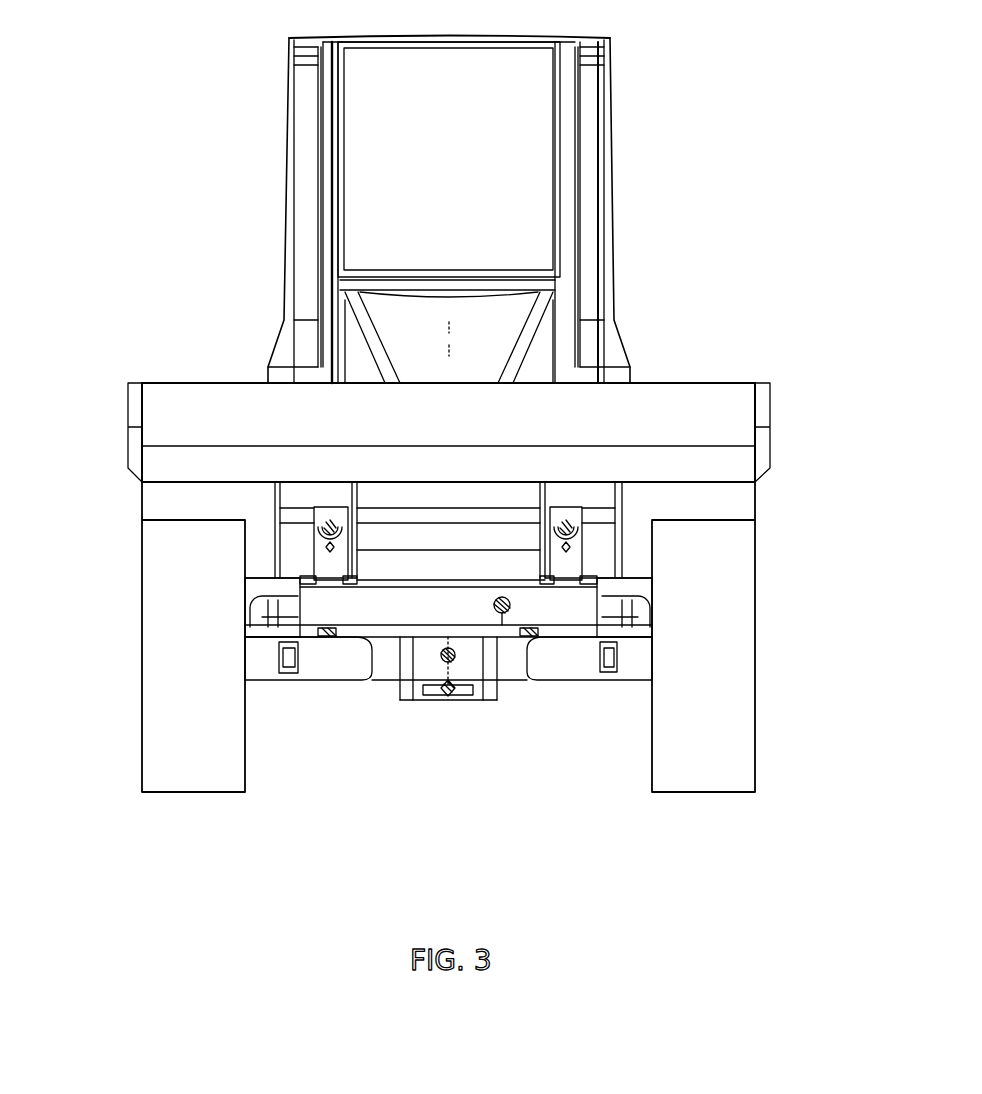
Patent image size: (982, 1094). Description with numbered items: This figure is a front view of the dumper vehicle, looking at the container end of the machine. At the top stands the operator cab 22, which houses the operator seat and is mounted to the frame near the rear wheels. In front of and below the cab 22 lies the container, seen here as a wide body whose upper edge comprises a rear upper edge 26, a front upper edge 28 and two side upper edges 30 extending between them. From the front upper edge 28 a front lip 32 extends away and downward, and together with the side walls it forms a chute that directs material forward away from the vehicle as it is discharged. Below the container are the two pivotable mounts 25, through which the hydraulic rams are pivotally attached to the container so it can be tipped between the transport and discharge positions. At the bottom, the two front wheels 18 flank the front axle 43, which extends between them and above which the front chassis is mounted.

The front wheels 18 is at (177, 732).
The operator cab 22 is at (502, 130).
The pivotable mounts 25 is at (330, 515).
The rear upper edge 26 is at (210, 382).
The front upper edge 28 is at (192, 443).
The side upper edges 30 is at (128, 382).
The front lip 32 is at (715, 482).
The front axle 43 is at (343, 658).